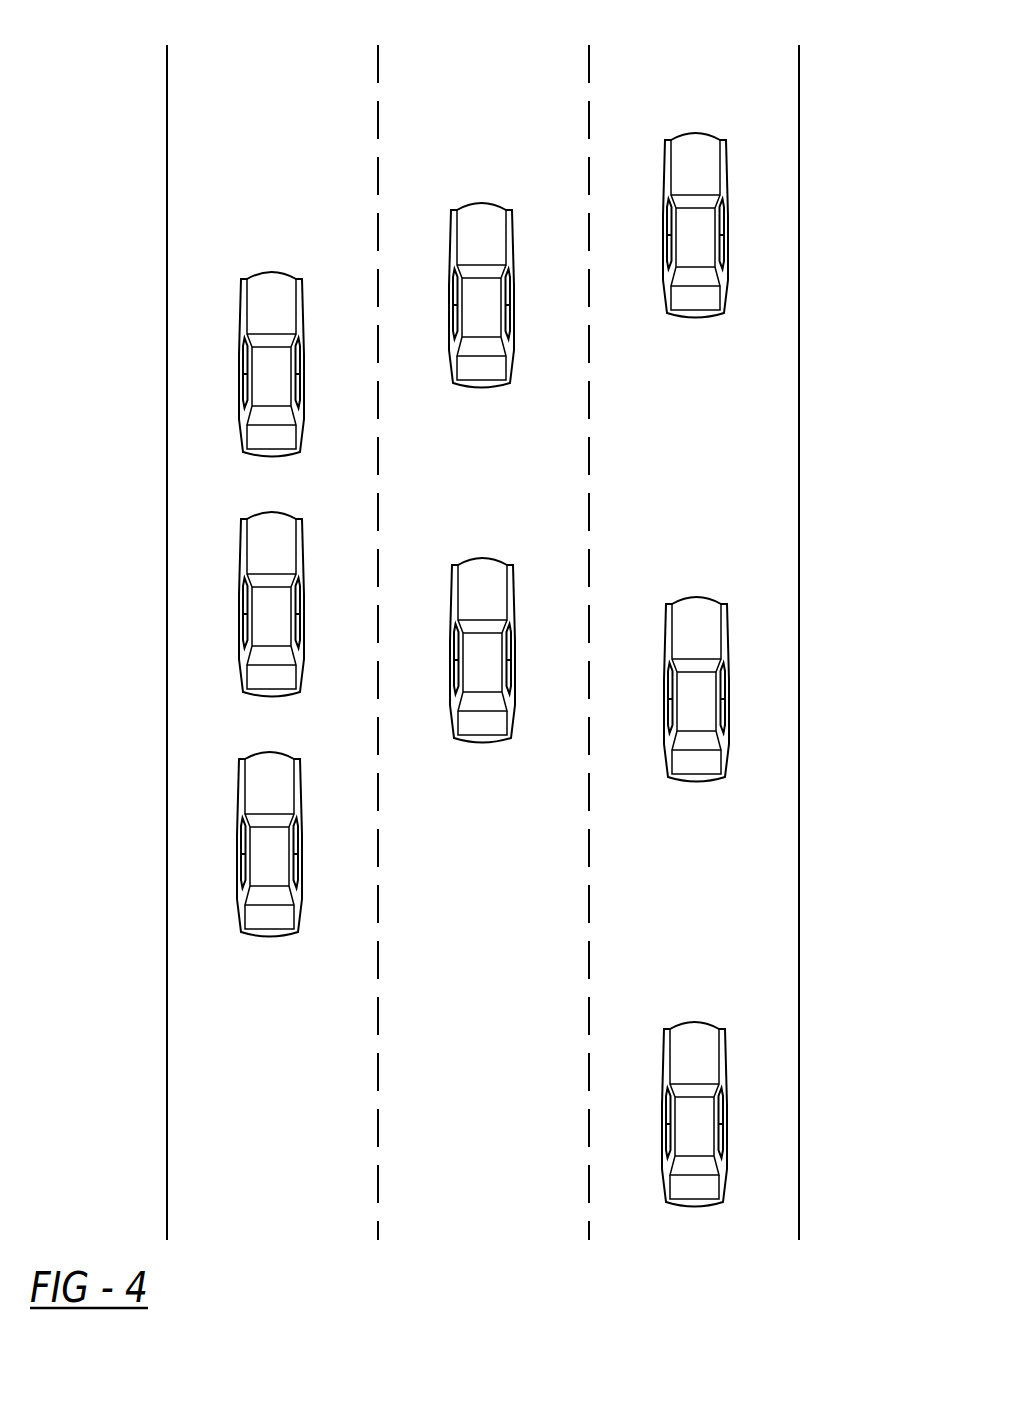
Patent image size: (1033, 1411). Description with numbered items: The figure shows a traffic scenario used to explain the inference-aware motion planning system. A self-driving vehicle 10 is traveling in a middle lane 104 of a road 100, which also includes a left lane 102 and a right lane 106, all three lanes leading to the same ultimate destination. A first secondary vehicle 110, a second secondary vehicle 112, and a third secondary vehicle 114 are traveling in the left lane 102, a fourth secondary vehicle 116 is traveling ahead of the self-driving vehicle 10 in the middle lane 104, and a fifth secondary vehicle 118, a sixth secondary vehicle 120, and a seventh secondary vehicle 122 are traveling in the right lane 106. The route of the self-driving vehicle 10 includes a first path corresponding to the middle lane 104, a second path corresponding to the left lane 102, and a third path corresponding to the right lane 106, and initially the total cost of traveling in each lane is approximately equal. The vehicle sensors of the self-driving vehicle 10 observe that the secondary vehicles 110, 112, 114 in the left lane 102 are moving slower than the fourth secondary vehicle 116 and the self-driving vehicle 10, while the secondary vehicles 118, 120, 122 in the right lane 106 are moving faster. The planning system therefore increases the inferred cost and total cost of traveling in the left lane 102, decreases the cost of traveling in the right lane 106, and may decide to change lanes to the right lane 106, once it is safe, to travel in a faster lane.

The self-driving vehicle 10 is at (503, 562).
The road 100 is at (800, 976).
The left lane 102 is at (200, 52).
The middle lane 104 is at (428, 52).
The right lane 106 is at (752, 52).
The first secondary vehicle 110 is at (256, 277).
The second secondary vehicle 112 is at (256, 517).
The third secondary vehicle 114 is at (254, 757).
The fourth secondary vehicle 116 is at (466, 208).
The fifth secondary vehicle 118 is at (680, 138).
The sixth secondary vehicle 120 is at (681, 602).
The seventh secondary vehicle 122 is at (678, 1027).